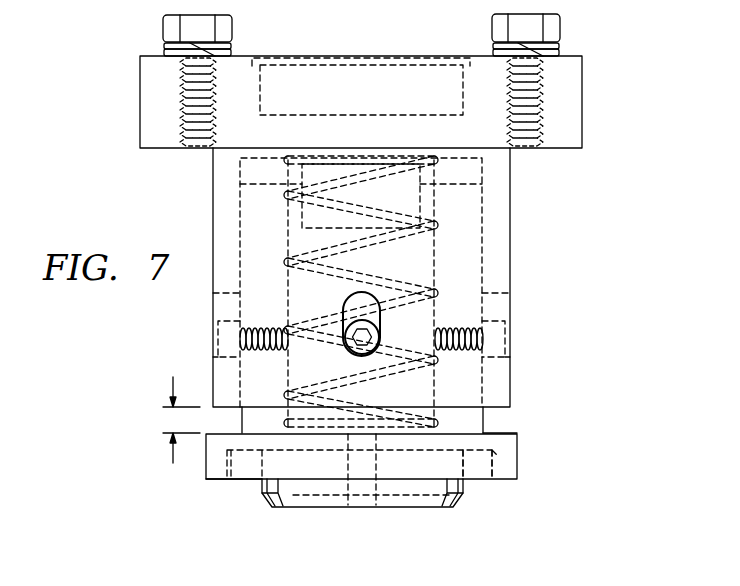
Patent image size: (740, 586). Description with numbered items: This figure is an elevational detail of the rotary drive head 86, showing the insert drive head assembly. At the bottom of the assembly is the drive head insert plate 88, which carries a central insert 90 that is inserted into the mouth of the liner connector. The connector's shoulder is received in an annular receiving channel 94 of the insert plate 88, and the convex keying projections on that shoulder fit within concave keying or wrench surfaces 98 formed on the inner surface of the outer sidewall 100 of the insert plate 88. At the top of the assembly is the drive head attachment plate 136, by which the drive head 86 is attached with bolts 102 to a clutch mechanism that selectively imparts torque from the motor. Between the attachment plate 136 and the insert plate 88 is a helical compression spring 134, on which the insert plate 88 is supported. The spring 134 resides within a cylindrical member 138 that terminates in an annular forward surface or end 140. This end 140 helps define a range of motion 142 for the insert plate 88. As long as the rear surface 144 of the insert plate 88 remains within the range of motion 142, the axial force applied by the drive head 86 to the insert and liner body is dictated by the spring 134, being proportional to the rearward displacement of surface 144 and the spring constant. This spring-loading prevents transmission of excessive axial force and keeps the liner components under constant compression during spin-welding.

The rotary head 86 is at (527, 264).
The drive head insert plate 88 is at (214, 478).
The central insert 90 is at (397, 500).
The annular receiving channel 94 is at (475, 470).
The concave keying or wrench surfaces 98 is at (503, 467).
The outer sidewall 100 is at (508, 458).
The bolts 102 is at (163, 32).
The helical compression spring 134 is at (307, 255).
The drive head attachment plate 136 is at (582, 98).
The cylindrical member 138 is at (505, 366).
The annular forward surface or end 140 is at (496, 408).
The range of motion 142 is at (179, 435).
The rear surface 144 is at (503, 432).